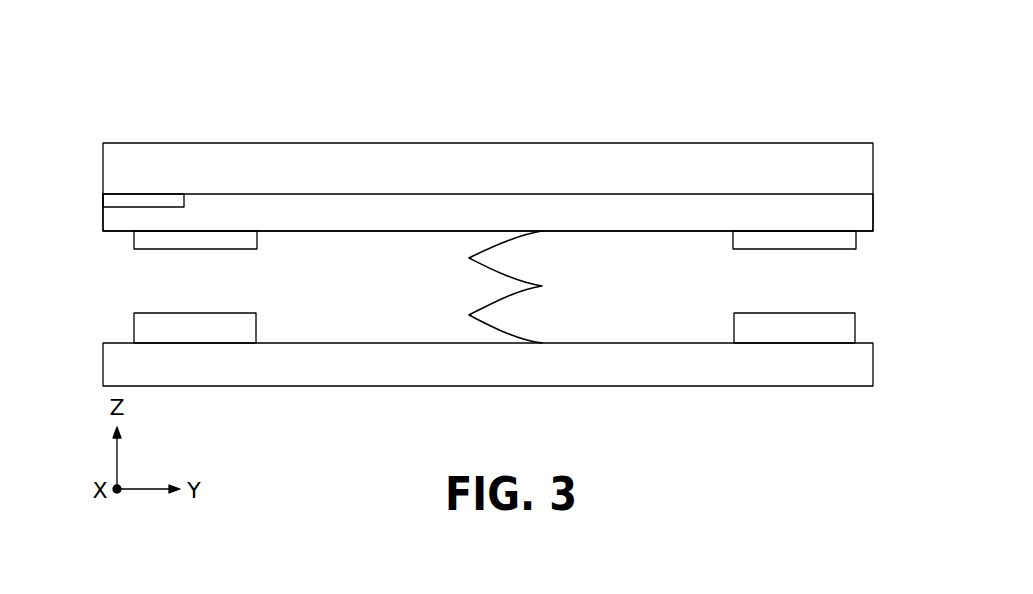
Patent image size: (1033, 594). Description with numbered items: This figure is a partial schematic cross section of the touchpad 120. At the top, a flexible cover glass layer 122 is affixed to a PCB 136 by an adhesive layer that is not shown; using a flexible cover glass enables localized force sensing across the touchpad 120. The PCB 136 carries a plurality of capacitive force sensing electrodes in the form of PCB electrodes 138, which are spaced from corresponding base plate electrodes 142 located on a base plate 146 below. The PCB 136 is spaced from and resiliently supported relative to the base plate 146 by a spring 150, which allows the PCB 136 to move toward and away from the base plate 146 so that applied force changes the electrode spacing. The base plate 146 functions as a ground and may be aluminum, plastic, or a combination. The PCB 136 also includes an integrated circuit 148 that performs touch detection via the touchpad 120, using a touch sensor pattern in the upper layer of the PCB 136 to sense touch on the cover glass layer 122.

The touchpad 120 is at (148, 68).
The flexible cover glass layer 122 is at (873, 181).
The PCB 136 is at (103, 215).
The integrated circuit 148 is at (112, 201).
The PCB electrodes 138 is at (230, 249).
The base plate electrodes 142 is at (155, 313).
The base plate 146 is at (103, 371).
The spring 150 is at (469, 315).